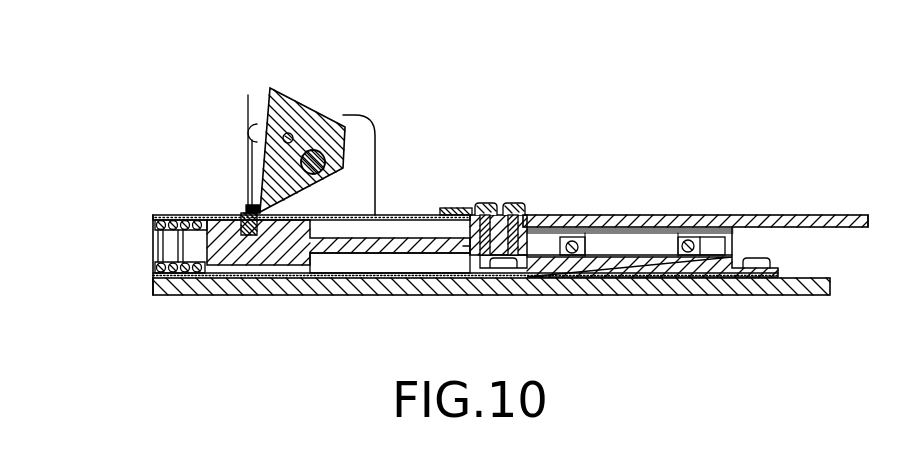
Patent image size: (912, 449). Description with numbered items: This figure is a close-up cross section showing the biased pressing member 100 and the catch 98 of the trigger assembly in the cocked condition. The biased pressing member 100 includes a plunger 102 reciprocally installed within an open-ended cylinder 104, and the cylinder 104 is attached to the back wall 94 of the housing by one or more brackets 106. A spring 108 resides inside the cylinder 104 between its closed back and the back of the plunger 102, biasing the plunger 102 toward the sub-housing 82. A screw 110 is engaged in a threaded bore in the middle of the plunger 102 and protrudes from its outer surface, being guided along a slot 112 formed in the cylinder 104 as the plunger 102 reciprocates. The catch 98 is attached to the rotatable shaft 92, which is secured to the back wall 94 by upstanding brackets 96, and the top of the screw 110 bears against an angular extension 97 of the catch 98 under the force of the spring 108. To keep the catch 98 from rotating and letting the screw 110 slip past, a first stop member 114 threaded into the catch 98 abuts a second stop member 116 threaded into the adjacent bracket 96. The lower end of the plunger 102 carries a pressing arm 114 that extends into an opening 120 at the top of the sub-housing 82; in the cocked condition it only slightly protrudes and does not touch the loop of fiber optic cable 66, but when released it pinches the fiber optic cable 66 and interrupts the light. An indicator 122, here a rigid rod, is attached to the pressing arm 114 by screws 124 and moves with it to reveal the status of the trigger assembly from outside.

The biased pressing member 100 is at (130, 223).
The back wall 94 is at (248, 281).
The plunger 102 is at (303, 263).
The cylinder 104 is at (170, 215).
The spring 108 is at (153, 253).
The screw 110 is at (243, 211).
The slot 112 is at (400, 214).
The second stop member 116 is at (255, 128).
The angular extension 97 is at (247, 210).
The catch 98 is at (320, 100).
The first stop member 114 is at (293, 87).
The rotatable shaft 92 is at (325, 153).
The upstanding bracket 96 is at (367, 127).
The bracket 106 is at (450, 207).
The screws 124 is at (483, 202).
The sub-housing 82 is at (637, 216).
The fiber optic cable 66 is at (574, 240).
The indicator 122 is at (847, 213).
The opening 120 is at (548, 249).